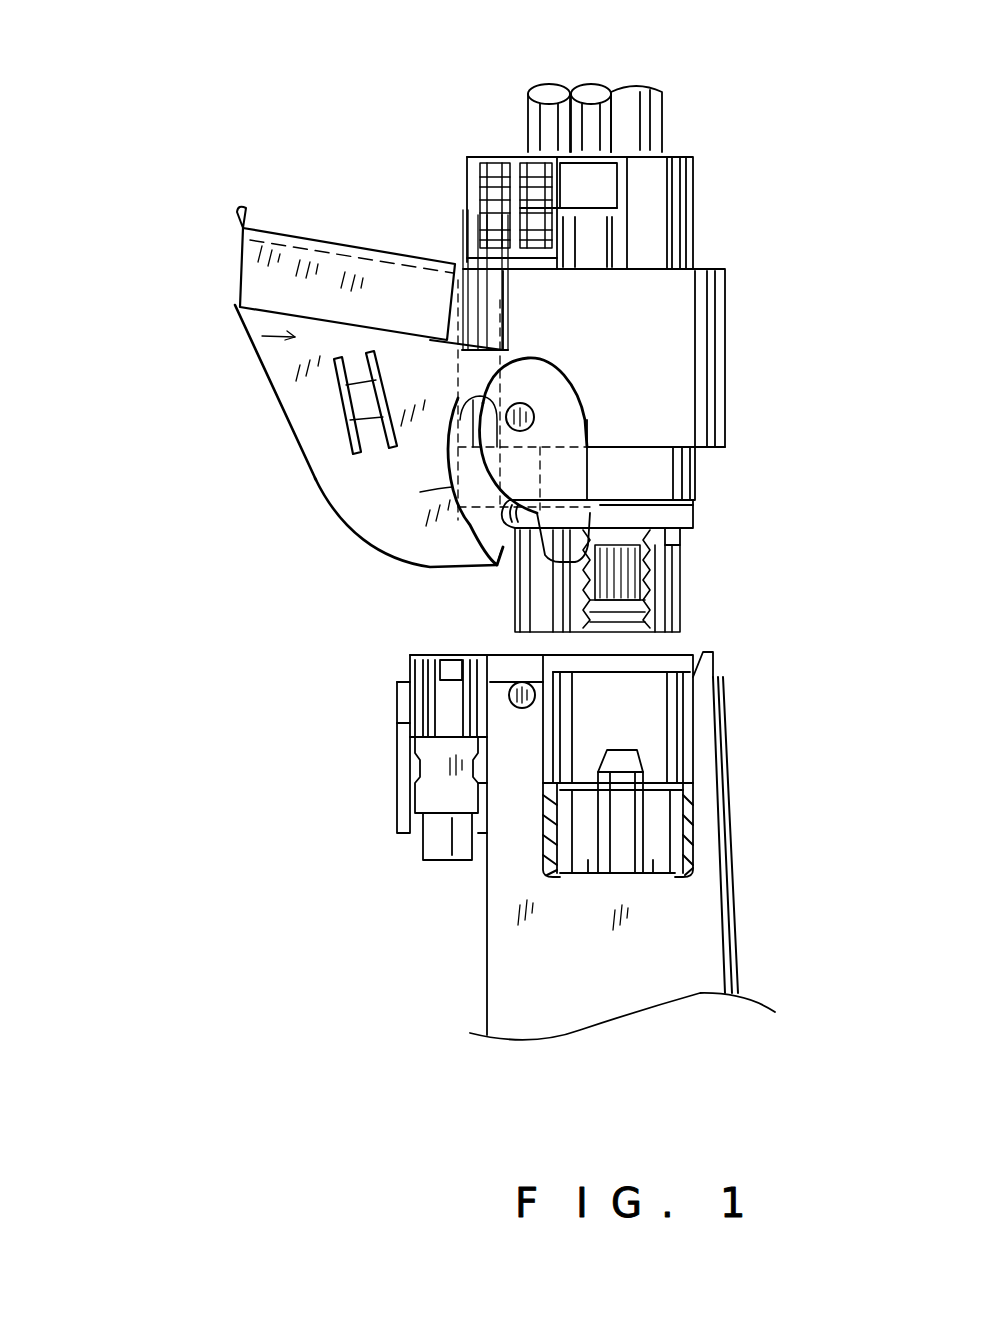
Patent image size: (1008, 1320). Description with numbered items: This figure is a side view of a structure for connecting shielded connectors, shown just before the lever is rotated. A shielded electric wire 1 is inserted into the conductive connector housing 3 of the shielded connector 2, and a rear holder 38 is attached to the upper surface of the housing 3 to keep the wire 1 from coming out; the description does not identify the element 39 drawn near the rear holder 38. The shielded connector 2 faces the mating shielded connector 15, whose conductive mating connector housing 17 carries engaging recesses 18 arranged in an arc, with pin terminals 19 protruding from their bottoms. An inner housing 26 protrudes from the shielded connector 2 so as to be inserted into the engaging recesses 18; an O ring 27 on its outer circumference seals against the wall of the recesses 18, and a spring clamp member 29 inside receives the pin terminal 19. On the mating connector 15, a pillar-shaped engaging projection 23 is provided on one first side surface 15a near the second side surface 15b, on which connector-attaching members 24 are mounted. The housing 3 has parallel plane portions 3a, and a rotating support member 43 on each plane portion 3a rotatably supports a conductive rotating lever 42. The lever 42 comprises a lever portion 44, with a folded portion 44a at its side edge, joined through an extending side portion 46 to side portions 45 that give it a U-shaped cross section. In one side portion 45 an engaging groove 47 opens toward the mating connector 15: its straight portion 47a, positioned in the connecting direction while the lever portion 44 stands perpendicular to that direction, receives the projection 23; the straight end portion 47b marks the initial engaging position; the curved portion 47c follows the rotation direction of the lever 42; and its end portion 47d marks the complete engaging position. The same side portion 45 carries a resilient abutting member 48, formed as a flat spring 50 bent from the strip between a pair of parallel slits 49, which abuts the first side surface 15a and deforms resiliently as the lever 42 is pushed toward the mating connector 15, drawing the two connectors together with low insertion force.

The shielded electric wire 1 is at (670, 117).
The shielded connector 2 is at (725, 270).
The conductive connector housing 3 is at (710, 340).
The plane portions 3a is at (515, 305).
The mating shielded connector 15 is at (733, 917).
The first side surfaces 15a is at (530, 1013).
The second side surface 15b is at (480, 900).
The conductive mating connector housing 17 is at (507, 937).
The engaging recesses 18 is at (665, 720).
The pin terminals 19 is at (623, 813).
The engaging projection 23 is at (483, 692).
The connector-attaching members 24 is at (443, 768).
The inner housing 26 is at (697, 482).
The O ring 27 is at (697, 512).
The spring clamp member 29 is at (680, 560).
The rear holder 38 is at (703, 150).
The springs 39 is at (547, 157).
The rotating lever 42 is at (257, 370).
The rotating support member 43 is at (540, 417).
The lever portion 44 is at (383, 247).
The folded portion 44a is at (237, 207).
The side portions 45 is at (283, 403).
The extending side portion 46 is at (337, 273).
The engaging groove 47 is at (440, 458).
The straight portion 47a is at (497, 570).
The straight end portion 47b is at (427, 560).
The curved portion 47c is at (433, 507).
The end portion 47d is at (505, 355).
The resilient abutting member 48 is at (290, 340).
The slits 49 is at (347, 385).
The flat spring 50 is at (357, 453).